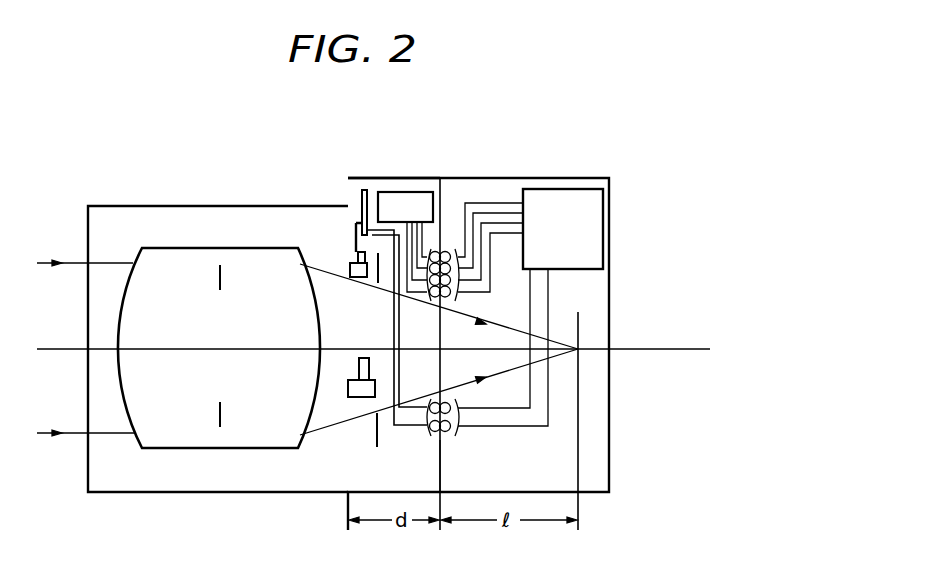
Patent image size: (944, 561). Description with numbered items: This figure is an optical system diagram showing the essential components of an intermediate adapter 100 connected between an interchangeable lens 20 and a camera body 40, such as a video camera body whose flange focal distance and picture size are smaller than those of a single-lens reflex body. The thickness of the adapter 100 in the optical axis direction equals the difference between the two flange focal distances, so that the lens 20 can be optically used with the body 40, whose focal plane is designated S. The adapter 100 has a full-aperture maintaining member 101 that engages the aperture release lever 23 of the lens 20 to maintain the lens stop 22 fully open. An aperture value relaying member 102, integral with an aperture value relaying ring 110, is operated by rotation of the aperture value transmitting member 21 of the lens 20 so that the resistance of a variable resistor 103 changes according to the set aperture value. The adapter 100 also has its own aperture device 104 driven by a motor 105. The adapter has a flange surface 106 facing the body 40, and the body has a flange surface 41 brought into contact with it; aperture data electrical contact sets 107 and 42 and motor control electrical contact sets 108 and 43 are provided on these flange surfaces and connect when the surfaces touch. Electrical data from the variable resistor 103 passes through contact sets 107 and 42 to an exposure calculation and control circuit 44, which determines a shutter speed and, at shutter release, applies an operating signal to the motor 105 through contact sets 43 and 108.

The interchangeable lens 20 is at (205, 203).
The aperture value transmitting member 21 is at (350, 275).
The lens stop 22 is at (220, 428).
The aperture release lever 23 is at (348, 388).
The camera body 40 is at (590, 176).
The flange surface 41 is at (440, 463).
The aperture data electrical contact set 42 is at (460, 428).
The motor control electrical contact set 43 is at (462, 283).
The exposure calculation and control circuit 44 is at (642, 322).
The intermediate adapter 100 is at (422, 177).
The full-aperture maintaining member 101 is at (359, 366).
The aperture value relaying member 102 is at (360, 257).
The variable resistor 103 is at (364, 189).
The aperture device 104 is at (375, 425).
The motor 105 is at (432, 203).
The flange surface 106 is at (440, 470).
The aperture data electrical contact set 107 is at (412, 420).
The motor control electrical contact set 108 is at (428, 277).
The aperture value relaying ring 110 is at (356, 250).
The focal plane S is at (578, 331).